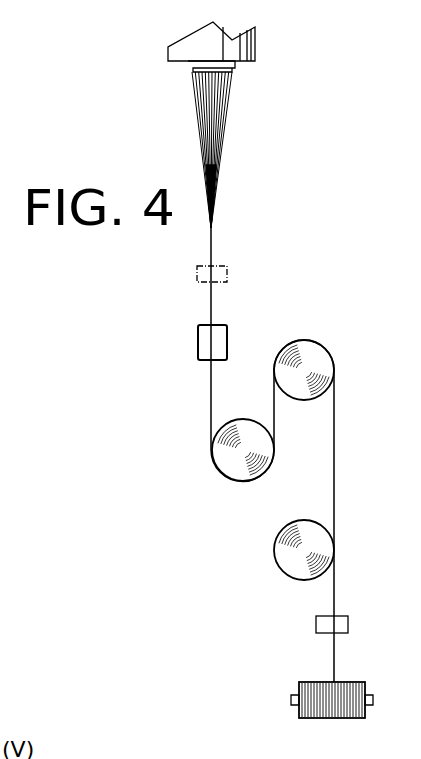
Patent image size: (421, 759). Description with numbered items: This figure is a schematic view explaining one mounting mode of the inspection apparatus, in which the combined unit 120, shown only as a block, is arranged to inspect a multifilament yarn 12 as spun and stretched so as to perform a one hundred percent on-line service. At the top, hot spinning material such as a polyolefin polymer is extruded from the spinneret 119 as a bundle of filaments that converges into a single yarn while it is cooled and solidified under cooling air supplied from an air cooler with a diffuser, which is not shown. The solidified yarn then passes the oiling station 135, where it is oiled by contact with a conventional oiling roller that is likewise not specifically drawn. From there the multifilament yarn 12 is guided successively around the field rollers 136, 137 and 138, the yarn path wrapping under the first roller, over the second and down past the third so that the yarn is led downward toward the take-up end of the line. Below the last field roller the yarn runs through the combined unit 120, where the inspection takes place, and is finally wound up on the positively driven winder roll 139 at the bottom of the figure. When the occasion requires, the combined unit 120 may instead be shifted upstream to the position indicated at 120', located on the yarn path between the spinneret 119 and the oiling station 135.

The spinneret 119 is at (257, 48).
The yarn 12 is at (412, 88).
The shifted position of combined unit 120' is at (249, 258).
The oiling station 135 is at (198, 345).
The field roller 137 is at (307, 350).
The field roller 136 is at (222, 465).
The field roller 138 is at (274, 553).
The combined unit 120 is at (290, 623).
The winder roll 139 is at (301, 684).